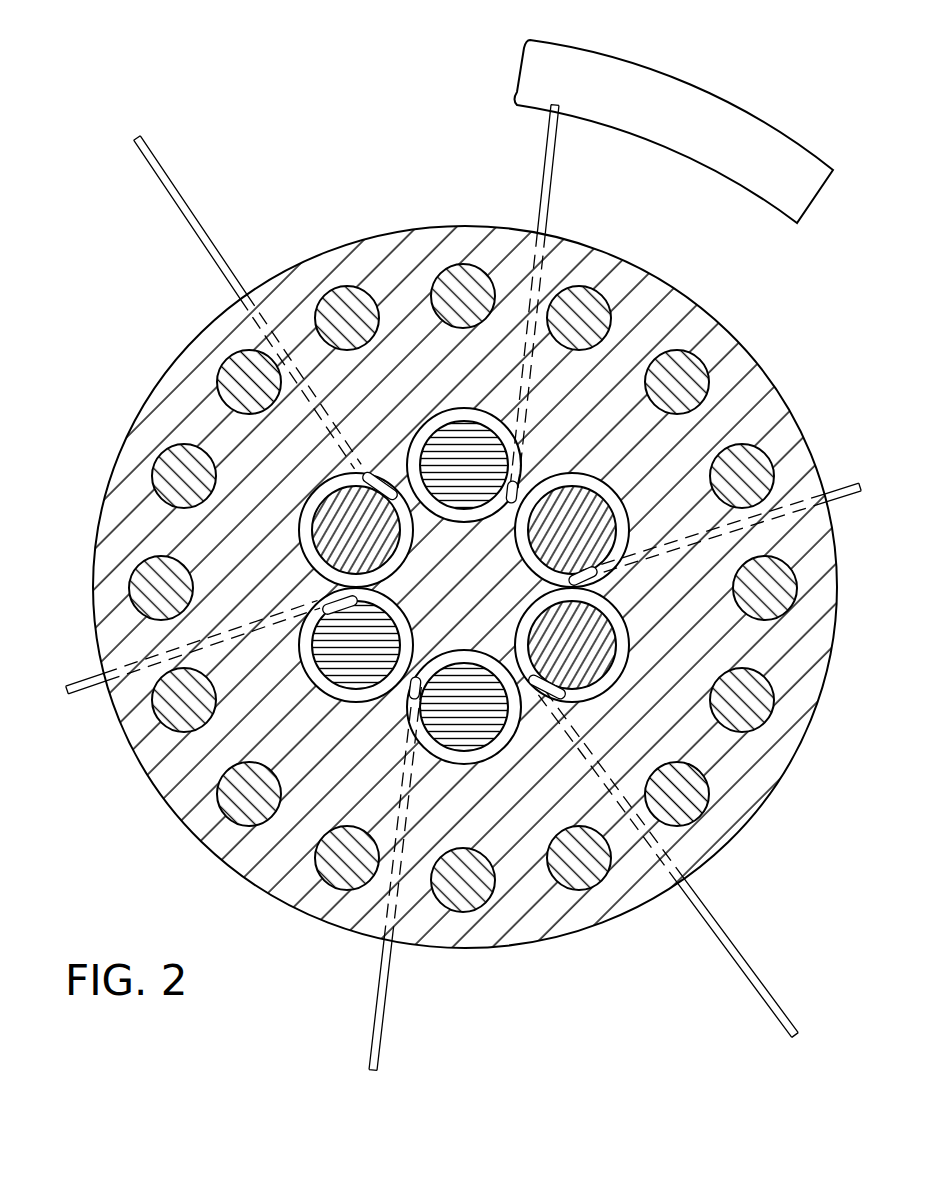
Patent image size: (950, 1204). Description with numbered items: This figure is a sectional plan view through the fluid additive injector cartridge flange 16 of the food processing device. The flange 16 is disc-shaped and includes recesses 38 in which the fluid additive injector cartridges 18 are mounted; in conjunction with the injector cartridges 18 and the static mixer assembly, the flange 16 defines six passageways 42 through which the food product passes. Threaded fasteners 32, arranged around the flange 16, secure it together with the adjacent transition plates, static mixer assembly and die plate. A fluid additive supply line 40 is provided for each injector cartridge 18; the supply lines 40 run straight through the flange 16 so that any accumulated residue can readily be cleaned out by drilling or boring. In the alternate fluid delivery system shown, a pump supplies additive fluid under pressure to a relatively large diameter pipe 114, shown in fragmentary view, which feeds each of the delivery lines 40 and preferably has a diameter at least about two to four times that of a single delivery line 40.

The fluid additive injector cartridge flange 16 is at (348, 240).
The fluid additive injector cartridge 18 is at (317, 500).
The threaded fasteners 32 is at (470, 591).
The recesses 38 is at (408, 465).
The fluid additive supply line 40 is at (472, 588).
The passageways 42 is at (316, 684).
The pipe 114 is at (690, 82).